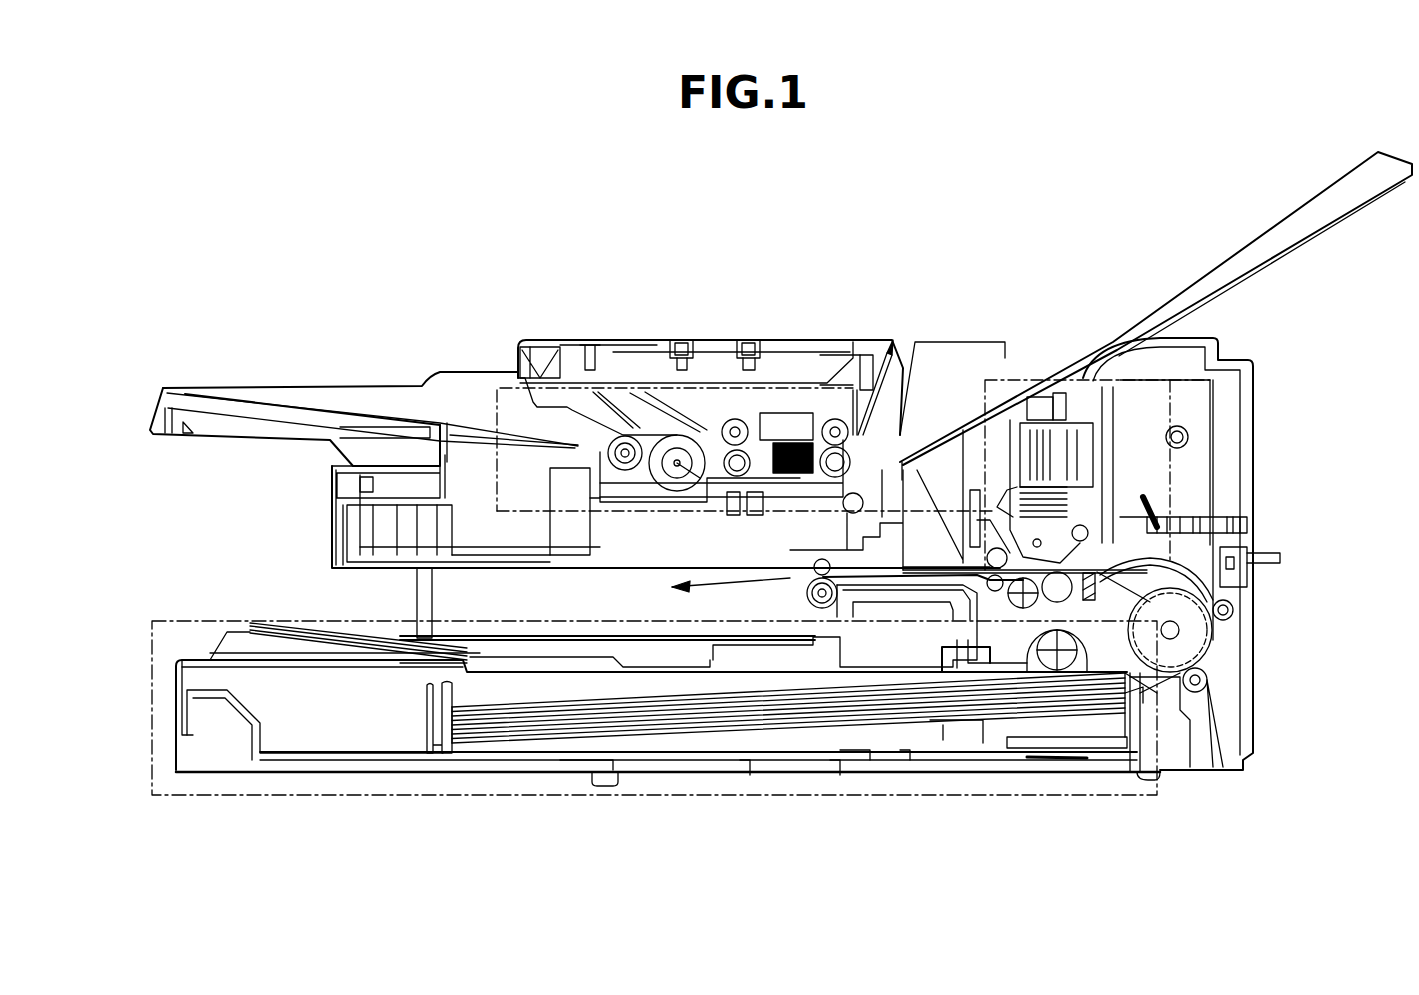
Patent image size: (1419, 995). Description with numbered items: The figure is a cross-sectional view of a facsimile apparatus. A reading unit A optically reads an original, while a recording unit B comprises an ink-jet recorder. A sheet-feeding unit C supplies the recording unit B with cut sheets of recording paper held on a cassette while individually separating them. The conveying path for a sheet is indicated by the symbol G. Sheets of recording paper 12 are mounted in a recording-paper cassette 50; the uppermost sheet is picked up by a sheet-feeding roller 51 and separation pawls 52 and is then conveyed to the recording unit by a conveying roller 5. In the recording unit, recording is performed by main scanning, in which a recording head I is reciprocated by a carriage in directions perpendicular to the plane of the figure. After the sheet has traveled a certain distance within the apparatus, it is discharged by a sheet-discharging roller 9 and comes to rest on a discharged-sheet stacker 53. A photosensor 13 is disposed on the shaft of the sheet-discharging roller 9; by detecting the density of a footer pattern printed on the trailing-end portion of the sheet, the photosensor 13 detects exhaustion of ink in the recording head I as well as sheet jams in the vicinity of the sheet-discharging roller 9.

The reading unit A is at (496, 428).
The recording head I is at (1025, 400).
The recording unit B is at (1172, 430).
The conveying roller 5 is at (1193, 642).
The recording-paper cassette 50 is at (380, 757).
The discharged-sheet stacker 53 is at (643, 657).
The conveying path G is at (713, 586).
The photosensor 13 is at (799, 605).
The sheet-discharging roller 9 is at (842, 608).
The recording paper 12 is at (900, 717).
The sheet-feeding unit C is at (995, 792).
The sheet-feeding roller 51 is at (1078, 660).
The separation pawls 52 is at (1140, 693).